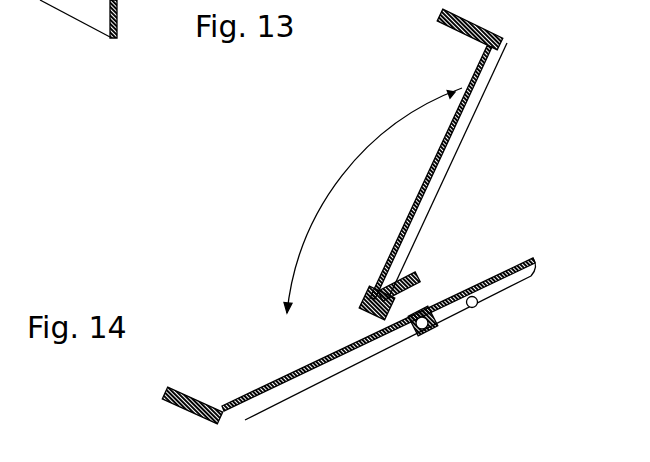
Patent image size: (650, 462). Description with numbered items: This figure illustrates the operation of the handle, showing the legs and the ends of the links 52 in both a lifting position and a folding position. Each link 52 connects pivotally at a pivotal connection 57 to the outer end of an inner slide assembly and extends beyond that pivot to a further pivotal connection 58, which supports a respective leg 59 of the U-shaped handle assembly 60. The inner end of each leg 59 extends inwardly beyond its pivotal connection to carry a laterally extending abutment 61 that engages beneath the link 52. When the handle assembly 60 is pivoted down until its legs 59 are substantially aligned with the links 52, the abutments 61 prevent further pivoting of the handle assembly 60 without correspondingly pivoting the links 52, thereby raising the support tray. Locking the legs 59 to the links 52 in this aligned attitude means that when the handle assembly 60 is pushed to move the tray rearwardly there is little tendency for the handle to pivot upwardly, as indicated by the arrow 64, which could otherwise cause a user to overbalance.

The link 52 is at (421, 280).
The pivotal connection 57 is at (476, 309).
The further pivotal connection 58 is at (370, 294).
The leg 59 is at (428, 215).
The handle assembly 60 is at (224, 333).
The abutment 61 is at (360, 309).
The arrow 64 is at (373, 200).